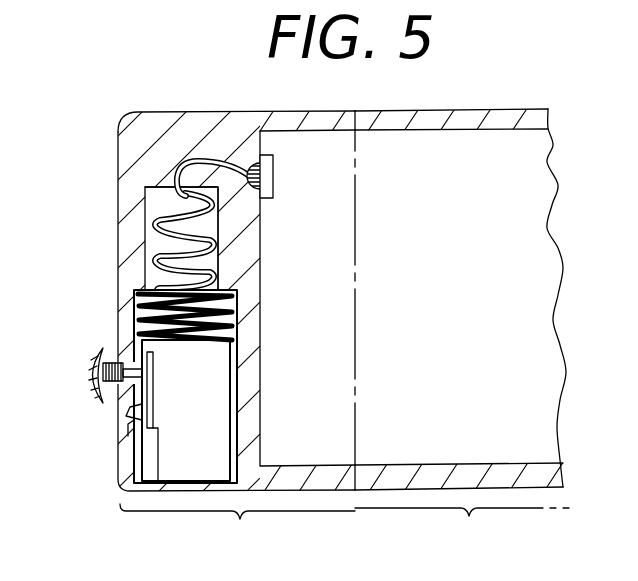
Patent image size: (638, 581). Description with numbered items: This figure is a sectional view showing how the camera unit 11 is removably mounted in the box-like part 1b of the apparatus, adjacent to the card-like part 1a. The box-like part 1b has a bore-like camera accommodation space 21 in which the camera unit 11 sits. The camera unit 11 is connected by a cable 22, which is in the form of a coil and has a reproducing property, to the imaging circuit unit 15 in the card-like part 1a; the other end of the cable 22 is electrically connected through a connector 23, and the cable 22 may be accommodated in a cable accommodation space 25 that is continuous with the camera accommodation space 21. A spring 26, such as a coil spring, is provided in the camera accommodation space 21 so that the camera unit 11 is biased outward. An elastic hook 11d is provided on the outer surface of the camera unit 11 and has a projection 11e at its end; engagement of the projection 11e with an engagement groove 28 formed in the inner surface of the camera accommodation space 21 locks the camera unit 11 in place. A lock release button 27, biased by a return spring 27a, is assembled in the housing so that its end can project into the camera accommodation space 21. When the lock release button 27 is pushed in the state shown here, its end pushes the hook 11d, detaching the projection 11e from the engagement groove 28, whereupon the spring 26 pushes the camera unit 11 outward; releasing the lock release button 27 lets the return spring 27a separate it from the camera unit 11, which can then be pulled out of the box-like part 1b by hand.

The card-like part 1a is at (462, 325).
The box-like part 1b is at (236, 328).
The camera unit 11 is at (141, 395).
The hook 11d is at (121, 346).
The projection 11e is at (130, 407).
The imaging circuit unit 15 is at (340, 261).
The camera accommodation space 21 is at (238, 348).
The cable 22 is at (174, 172).
The connector 23 is at (274, 173).
The cable accommodation space 25 is at (219, 229).
The spring 26 is at (218, 300).
The lock release button 27 is at (90, 365).
The return spring 27a is at (105, 355).
The engagement groove 28 is at (124, 426).